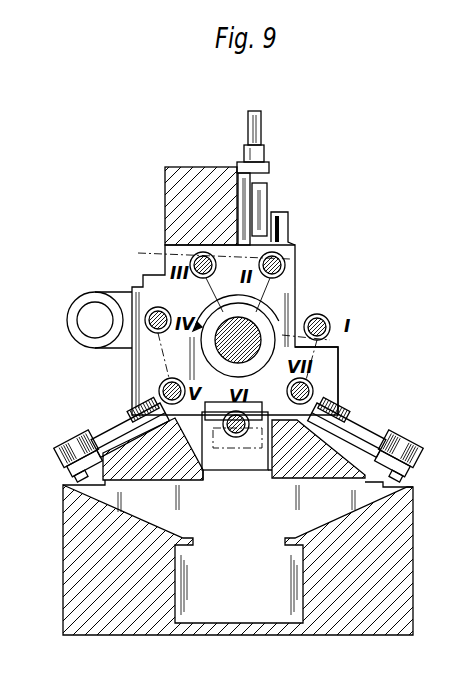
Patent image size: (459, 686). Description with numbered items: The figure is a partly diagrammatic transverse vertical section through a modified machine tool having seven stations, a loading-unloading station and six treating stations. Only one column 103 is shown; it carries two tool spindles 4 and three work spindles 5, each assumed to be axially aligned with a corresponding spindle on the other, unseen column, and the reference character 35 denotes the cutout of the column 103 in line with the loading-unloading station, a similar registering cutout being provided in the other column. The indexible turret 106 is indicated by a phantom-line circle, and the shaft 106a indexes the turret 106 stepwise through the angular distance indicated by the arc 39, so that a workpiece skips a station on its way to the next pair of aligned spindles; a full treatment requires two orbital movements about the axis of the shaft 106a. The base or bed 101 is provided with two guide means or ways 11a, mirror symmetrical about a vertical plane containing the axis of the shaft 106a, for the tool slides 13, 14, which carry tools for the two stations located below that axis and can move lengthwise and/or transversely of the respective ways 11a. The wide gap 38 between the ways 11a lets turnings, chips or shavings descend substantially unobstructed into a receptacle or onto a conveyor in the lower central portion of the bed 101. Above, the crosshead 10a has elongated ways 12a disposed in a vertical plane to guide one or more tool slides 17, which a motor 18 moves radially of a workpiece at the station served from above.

The tool spindle 4 is at (152, 307).
The work spindle 5 is at (296, 246).
The crosshead 10a is at (212, 173).
The ways 11a is at (148, 500).
The ways 12a is at (150, 188).
The tool slide 13 is at (372, 433).
The tool slide 14 is at (93, 432).
The tool slide 17 is at (266, 194).
The motor 18 is at (263, 122).
The cutout 35 is at (347, 237).
The gap 38 is at (215, 480).
The arc 39 is at (276, 316).
The base or bed 101 is at (73, 603).
The column 103 is at (338, 365).
The indexible turret 106 is at (380, 337).
The shaft 106a is at (282, 335).